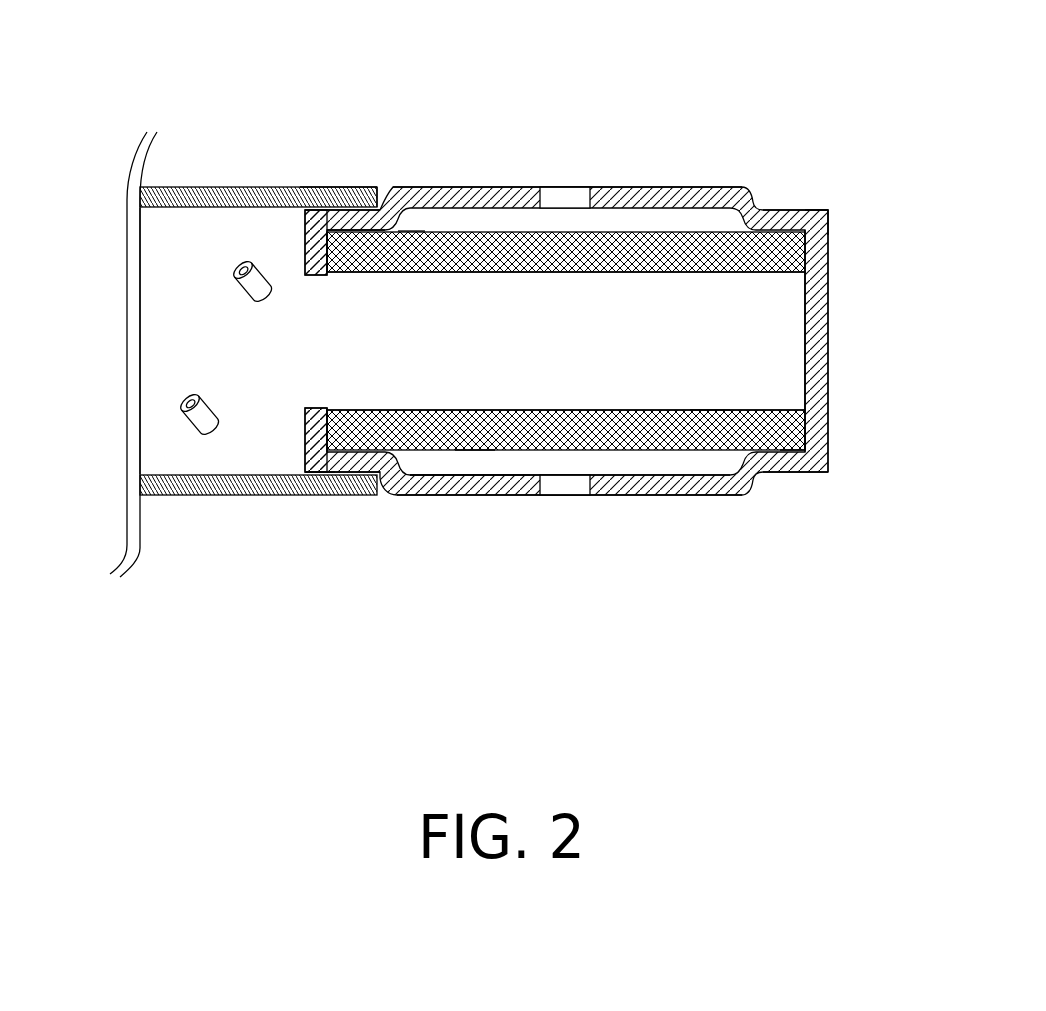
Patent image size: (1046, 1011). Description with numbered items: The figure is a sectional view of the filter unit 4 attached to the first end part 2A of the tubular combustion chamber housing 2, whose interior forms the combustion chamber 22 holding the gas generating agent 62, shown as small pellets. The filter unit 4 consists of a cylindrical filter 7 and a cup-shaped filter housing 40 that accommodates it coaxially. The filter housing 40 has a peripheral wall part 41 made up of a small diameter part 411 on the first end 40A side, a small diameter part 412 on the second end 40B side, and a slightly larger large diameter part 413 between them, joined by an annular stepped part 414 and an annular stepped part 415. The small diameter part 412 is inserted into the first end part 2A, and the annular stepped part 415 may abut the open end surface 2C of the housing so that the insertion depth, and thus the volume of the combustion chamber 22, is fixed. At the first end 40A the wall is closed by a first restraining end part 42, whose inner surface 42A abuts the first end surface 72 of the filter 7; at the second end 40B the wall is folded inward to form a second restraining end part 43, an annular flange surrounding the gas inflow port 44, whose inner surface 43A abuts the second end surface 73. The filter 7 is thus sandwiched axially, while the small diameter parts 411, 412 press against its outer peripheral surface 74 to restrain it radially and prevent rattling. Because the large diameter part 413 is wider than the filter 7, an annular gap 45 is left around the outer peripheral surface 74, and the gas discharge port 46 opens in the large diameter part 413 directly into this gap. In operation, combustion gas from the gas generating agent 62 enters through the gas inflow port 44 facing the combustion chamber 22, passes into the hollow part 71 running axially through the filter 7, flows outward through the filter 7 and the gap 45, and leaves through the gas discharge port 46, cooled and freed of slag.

The combustion chamber housing 2 is at (190, 510).
The first end part 2A is at (355, 178).
The open end surface 2C is at (380, 185).
The combustion chamber 22 is at (191, 333).
The gas generating agent 62 is at (188, 425).
The filter unit 4 is at (792, 107).
The filter housing 40 is at (465, 174).
The first end 40A is at (826, 195).
The second end 40B is at (312, 478).
The peripheral wall part 41 is at (518, 187).
The small diameter part 411 is at (783, 476).
The small diameter part 412 is at (365, 497).
The large diameter part 413 is at (665, 497).
The annular stepped part 414 is at (710, 410).
The annular stepped part 415 is at (410, 234).
The first restraining end part 42 is at (828, 322).
The inner surface of first restraining end part 42A is at (800, 350).
The second restraining end part 43 is at (305, 248).
The inner surface of second restraining end part 43A is at (347, 418).
The gas inflow port 44 is at (317, 333).
The gap 45 is at (516, 462).
The gas discharge port 46 is at (583, 187).
The filter 7 is at (655, 245).
The hollow part 71 is at (569, 365).
The first end surface 72 is at (807, 430).
The second end surface 73 is at (305, 231).
The outer peripheral surface 74 is at (475, 455).